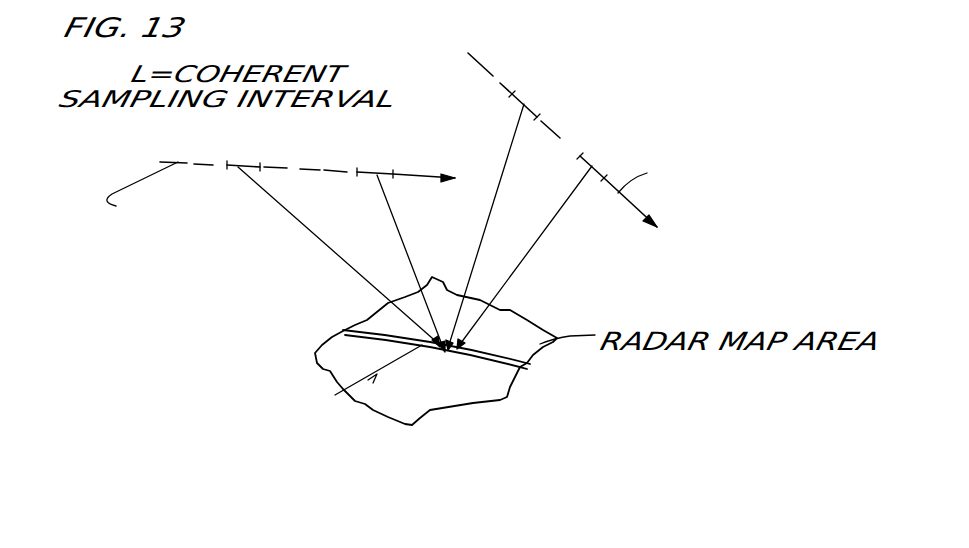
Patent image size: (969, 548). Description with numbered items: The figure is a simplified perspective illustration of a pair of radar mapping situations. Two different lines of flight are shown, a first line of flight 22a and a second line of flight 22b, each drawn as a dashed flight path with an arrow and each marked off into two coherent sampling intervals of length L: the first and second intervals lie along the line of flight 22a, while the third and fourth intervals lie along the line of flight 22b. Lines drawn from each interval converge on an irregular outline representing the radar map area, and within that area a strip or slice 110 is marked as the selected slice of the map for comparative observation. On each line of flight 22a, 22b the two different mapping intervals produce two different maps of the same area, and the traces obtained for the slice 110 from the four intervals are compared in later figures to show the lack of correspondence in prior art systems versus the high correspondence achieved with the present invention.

The line of flight 22a is at (321, 149).
The line of flight 22b is at (563, 133).
The slice of the map area 110 is at (510, 369).